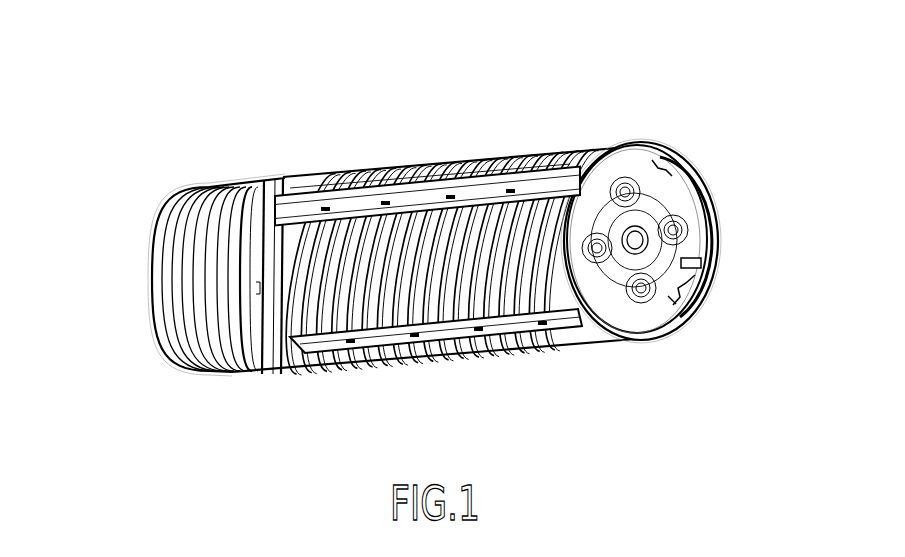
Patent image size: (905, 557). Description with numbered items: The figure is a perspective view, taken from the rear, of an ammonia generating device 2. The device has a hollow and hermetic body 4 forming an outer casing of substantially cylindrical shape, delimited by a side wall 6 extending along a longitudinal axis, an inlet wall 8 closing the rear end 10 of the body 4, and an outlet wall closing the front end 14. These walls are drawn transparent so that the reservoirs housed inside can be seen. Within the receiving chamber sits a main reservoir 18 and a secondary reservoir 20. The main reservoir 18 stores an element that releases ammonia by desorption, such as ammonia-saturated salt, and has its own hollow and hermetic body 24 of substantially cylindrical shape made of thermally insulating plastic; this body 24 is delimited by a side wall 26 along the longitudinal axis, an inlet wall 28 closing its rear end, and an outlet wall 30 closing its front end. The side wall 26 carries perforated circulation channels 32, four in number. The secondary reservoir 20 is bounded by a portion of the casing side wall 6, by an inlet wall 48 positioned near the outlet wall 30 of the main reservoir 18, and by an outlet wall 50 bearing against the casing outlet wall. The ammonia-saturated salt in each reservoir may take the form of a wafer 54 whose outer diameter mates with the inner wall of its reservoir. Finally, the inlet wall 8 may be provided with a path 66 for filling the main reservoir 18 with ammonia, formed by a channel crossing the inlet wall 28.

The ammonia generating device 2 is at (454, 239).
The hollow and hermetic body 4 is at (353, 250).
The side wall 6 is at (508, 350).
The inlet wall 8 is at (718, 232).
The rear end 10 is at (701, 211).
The front end 14 is at (165, 197).
The main reservoir 18 is at (457, 290).
The secondary reservoir 20 is at (247, 376).
The hollow and hermetic body 24 is at (417, 295).
The side wall 26 is at (430, 170).
The inlet wall 28 is at (623, 188).
The outlet wall 30 is at (307, 172).
The perforated circulation channels 32 is at (268, 345).
The inlet wall 48 is at (289, 175).
The outlet wall 50 is at (222, 185).
The wafer 54 is at (330, 303).
The path 66 is at (670, 298).